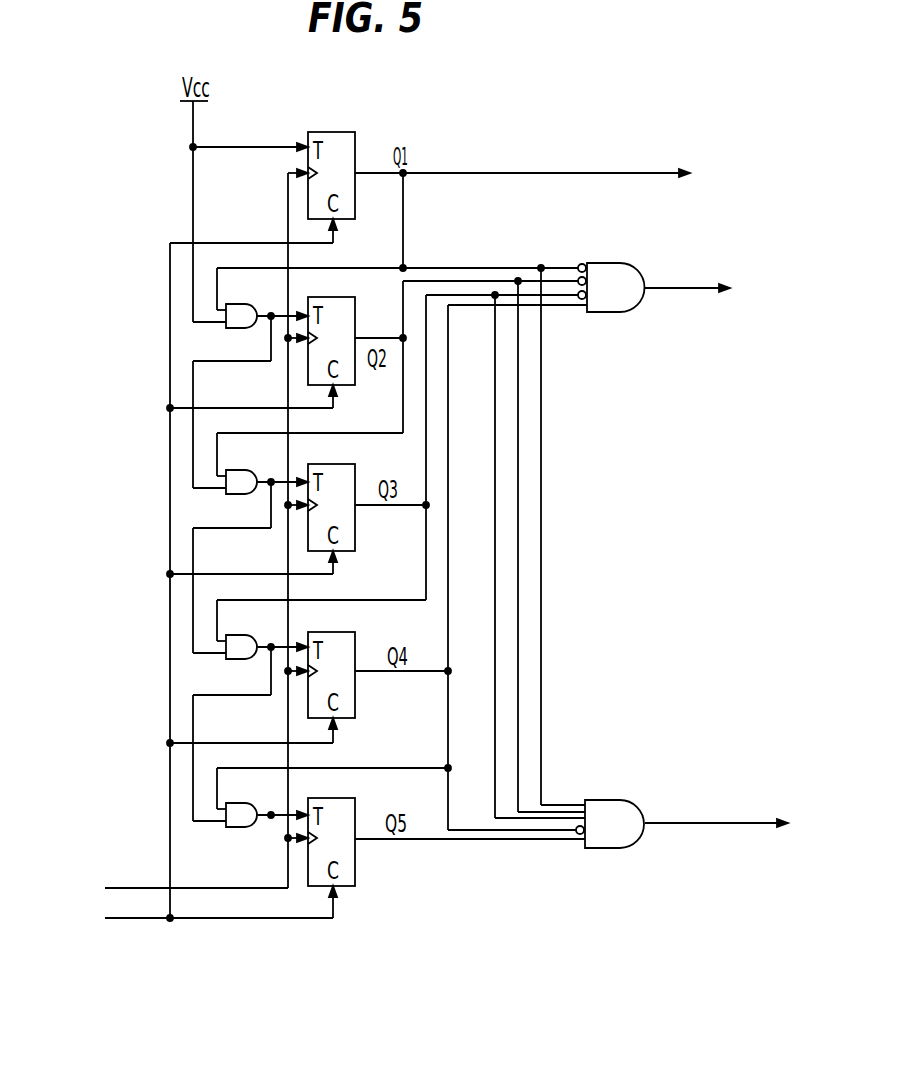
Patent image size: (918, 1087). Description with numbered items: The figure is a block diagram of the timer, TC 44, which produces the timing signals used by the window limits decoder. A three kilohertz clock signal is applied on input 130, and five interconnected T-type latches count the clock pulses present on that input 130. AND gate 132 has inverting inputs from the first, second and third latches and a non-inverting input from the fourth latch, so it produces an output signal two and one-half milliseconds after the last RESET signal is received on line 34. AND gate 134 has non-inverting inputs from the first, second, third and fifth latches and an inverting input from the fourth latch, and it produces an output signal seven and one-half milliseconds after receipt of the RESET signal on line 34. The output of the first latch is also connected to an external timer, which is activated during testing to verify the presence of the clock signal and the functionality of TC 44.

The TC 44 is at (628, 157).
The AND gate 132 is at (631, 308).
The AND gate 134 is at (622, 800).
The input 130 is at (143, 888).
The line 34 is at (127, 918).